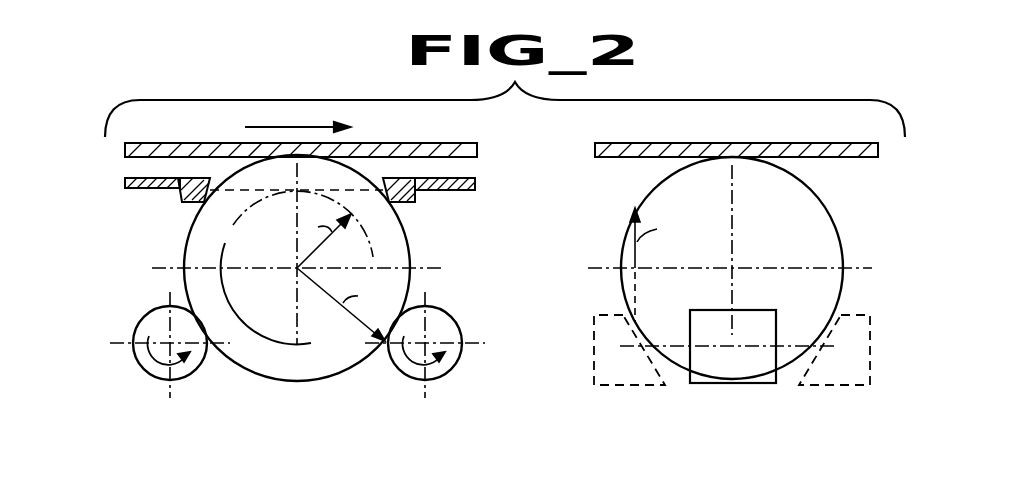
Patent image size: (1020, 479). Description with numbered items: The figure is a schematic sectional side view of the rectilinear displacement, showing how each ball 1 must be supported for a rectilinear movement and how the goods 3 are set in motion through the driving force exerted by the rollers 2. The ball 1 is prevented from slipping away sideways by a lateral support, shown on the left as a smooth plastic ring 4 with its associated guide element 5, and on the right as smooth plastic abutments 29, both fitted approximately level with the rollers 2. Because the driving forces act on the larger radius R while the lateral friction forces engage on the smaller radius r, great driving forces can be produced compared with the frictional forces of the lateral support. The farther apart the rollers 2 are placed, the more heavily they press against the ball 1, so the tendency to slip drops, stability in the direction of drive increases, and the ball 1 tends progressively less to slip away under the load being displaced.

The ball 1 is at (397, 237).
The rollers 2 is at (156, 320).
The goods 3 is at (378, 148).
The smooth plastic ring 4 is at (190, 200).
The guide plate 5 is at (125, 183).
The smooth plastic abutments 29 is at (845, 317).